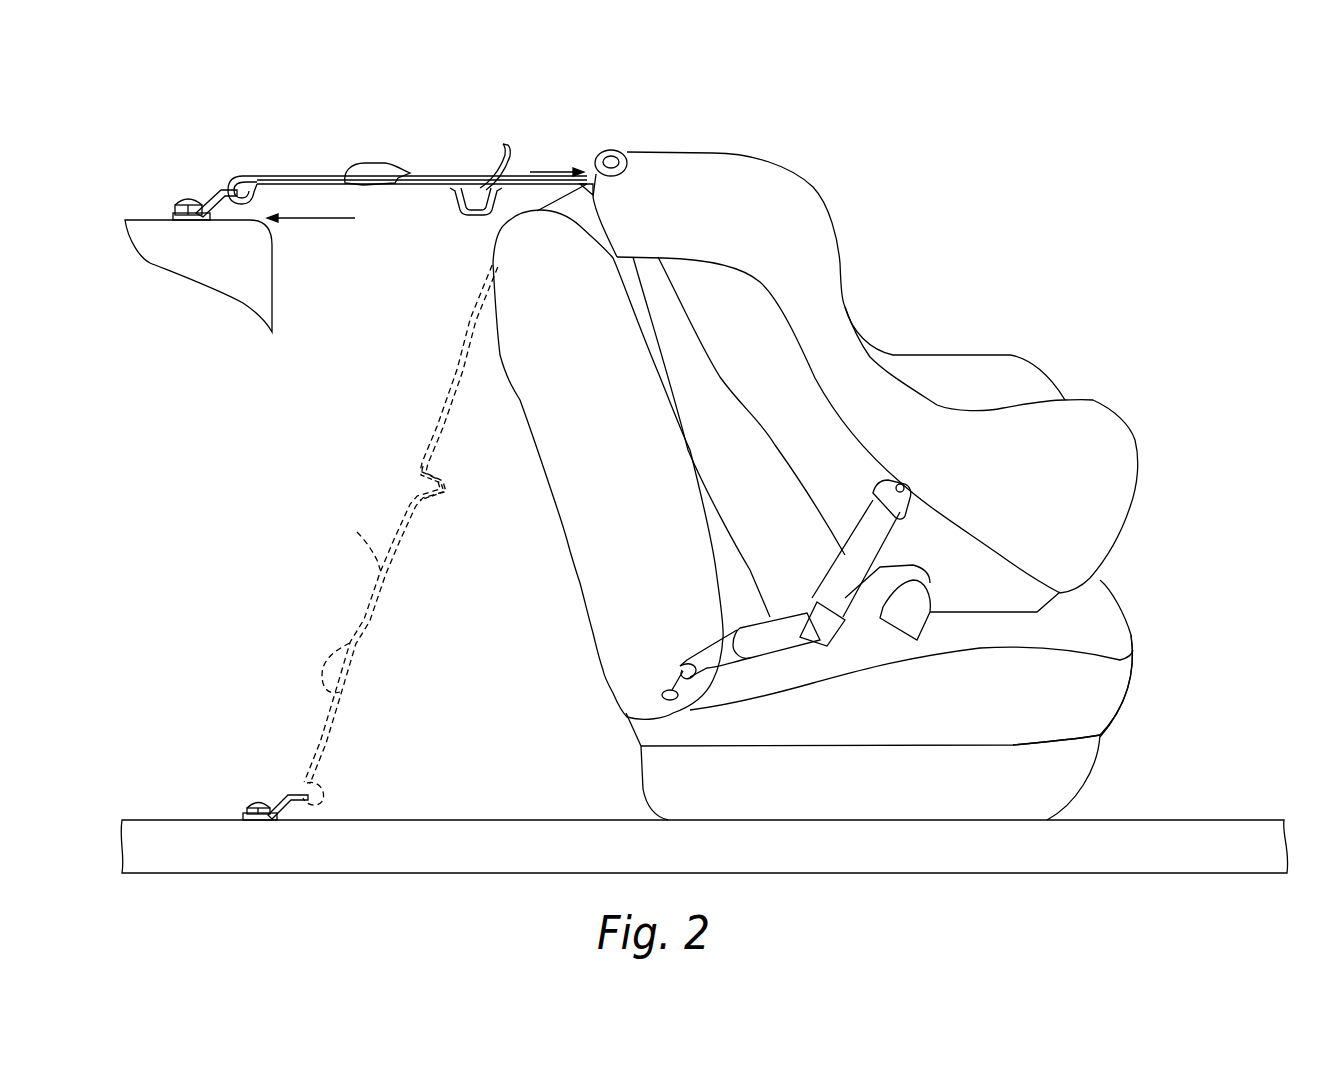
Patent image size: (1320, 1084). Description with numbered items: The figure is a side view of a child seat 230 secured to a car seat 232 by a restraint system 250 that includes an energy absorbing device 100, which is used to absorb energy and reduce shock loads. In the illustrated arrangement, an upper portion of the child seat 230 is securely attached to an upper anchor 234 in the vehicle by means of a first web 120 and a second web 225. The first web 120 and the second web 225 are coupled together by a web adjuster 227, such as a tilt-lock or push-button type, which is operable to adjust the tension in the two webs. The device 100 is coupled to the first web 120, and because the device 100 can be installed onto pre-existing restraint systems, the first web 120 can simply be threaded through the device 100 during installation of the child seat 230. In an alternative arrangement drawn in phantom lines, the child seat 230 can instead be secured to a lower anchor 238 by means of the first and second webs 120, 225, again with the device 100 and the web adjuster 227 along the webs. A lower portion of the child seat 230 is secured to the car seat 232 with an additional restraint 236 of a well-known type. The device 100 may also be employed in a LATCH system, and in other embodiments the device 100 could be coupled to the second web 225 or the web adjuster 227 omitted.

The energy absorbing device 100 is at (460, 197).
The first web 120 is at (513, 187).
The second web 225 is at (272, 178).
The web adjuster 227 is at (358, 167).
The child seat 230 is at (1107, 452).
The car seat 232 is at (1103, 620).
The upper anchor 234 is at (182, 198).
The restraint 236 is at (783, 640).
The lower anchor 238 is at (260, 800).
The restraint system 250 is at (200, 110).